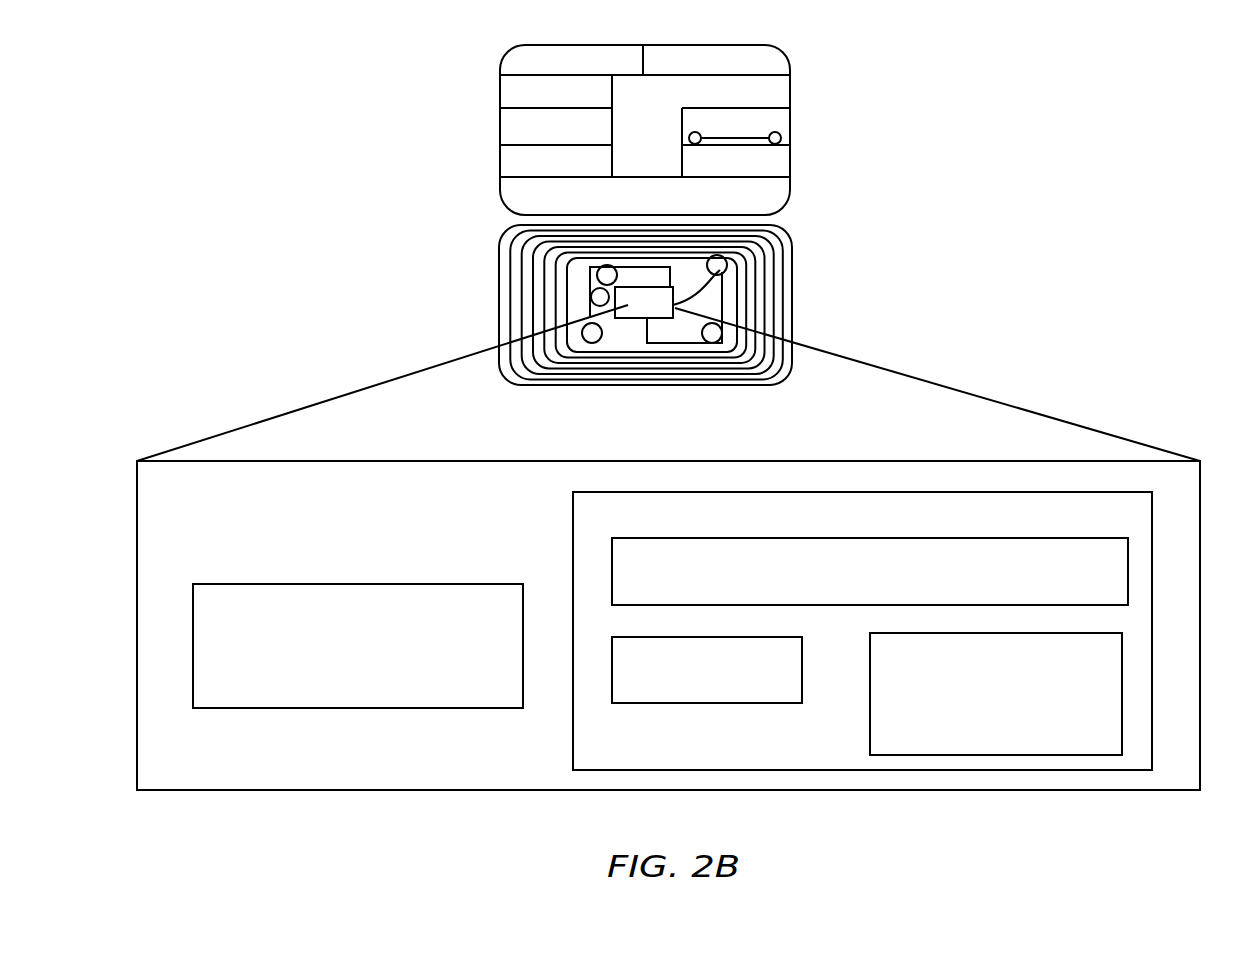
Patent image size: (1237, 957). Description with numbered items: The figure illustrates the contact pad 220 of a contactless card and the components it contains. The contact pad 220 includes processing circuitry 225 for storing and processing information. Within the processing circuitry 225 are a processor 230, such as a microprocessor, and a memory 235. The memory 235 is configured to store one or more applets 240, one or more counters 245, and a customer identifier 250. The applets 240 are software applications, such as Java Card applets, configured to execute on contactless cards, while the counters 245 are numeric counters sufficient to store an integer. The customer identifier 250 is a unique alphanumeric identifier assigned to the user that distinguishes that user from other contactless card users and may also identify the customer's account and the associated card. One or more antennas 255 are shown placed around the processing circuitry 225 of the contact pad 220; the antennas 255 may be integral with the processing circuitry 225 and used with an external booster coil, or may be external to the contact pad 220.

The contact pad 220 is at (552, 130).
The processing circuitry 225 is at (663, 308).
The processor 230 is at (358, 646).
The memory 235 is at (862, 631).
The applets 240 is at (870, 571).
The counters 245 is at (707, 670).
The customer identifier 250 is at (996, 694).
The antennas 255 is at (770, 283).